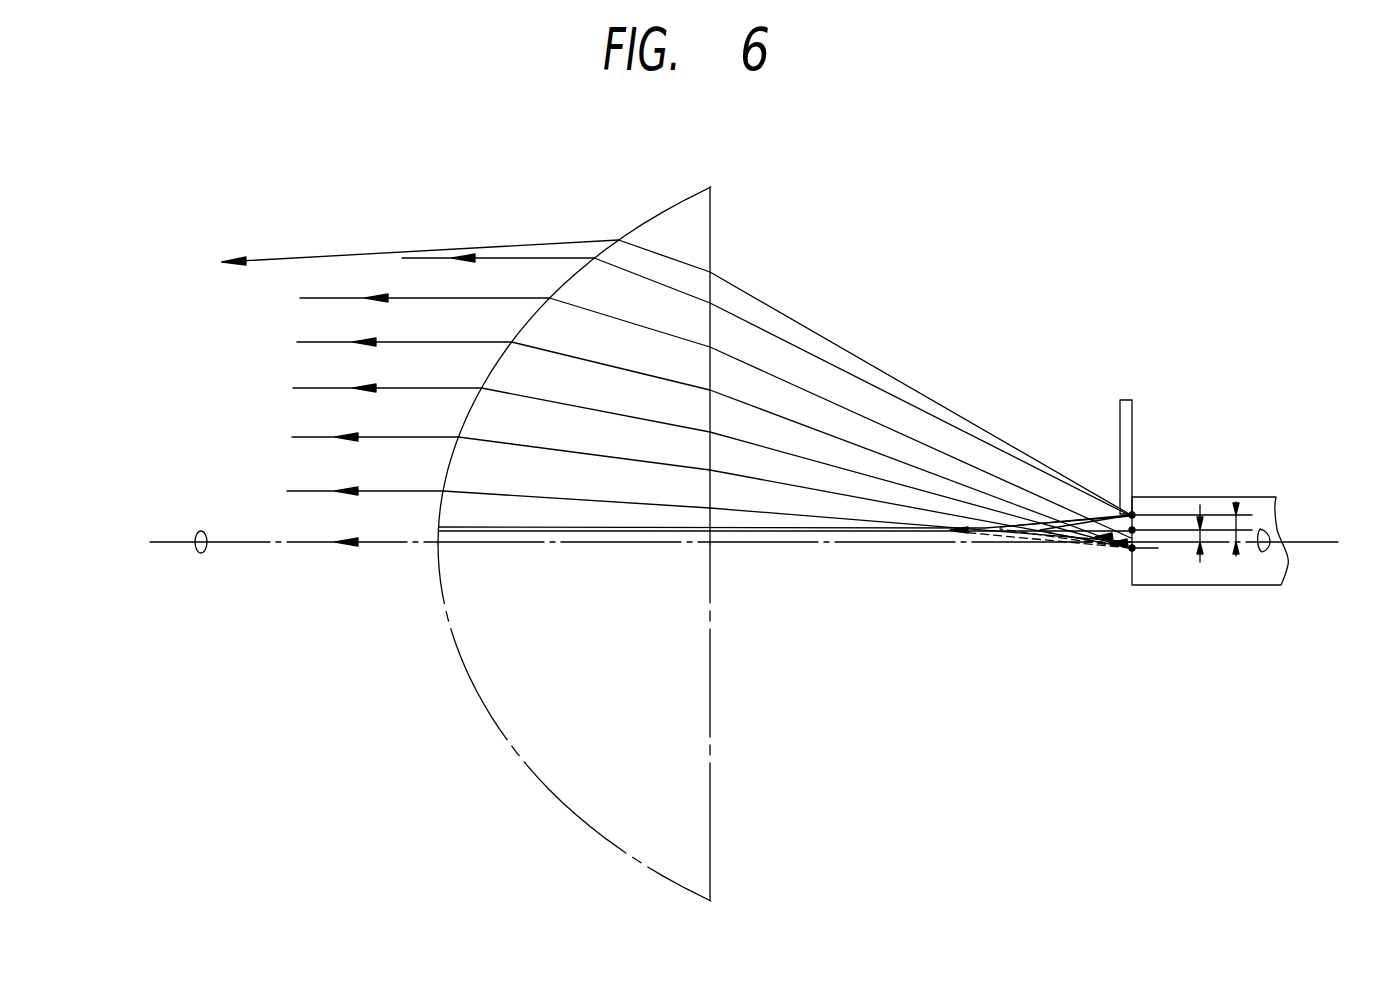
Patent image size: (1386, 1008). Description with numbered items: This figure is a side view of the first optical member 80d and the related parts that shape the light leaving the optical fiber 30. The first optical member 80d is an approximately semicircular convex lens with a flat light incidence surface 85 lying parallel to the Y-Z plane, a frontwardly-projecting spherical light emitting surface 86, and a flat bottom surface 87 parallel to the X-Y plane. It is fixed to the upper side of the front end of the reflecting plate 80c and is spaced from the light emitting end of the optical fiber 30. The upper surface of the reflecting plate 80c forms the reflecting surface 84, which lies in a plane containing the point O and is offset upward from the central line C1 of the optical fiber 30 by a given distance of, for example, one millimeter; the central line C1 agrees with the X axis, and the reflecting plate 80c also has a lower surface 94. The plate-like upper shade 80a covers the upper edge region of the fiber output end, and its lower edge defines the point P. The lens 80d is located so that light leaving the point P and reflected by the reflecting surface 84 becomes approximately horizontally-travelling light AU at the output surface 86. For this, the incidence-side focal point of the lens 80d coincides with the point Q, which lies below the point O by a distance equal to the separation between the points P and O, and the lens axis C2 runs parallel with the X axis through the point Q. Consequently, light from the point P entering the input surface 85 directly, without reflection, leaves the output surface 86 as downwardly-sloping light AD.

The first optical member 80d is at (624, 530).
The light incidence surface 85 is at (713, 253).
The light emitting surface 86 is at (634, 230).
The upper shade 80a is at (1135, 412).
The reflecting plate 80c is at (808, 530).
The reflecting surface 84 is at (843, 527).
The bottom surface 87 is at (565, 527).
The lower surface 94 is at (758, 530).
The optical fiber 30 is at (1213, 507).
The intersection point P is at (1133, 513).
The point O is at (1135, 527).
The point Q is at (1137, 553).
The central line of the optical fiber C1 is at (1268, 550).
The axis of the semicircular convex lens C2 is at (200, 553).
The approximately horizontally-travelling light AU is at (320, 298).
The downwardly-sloping light AD is at (488, 245).